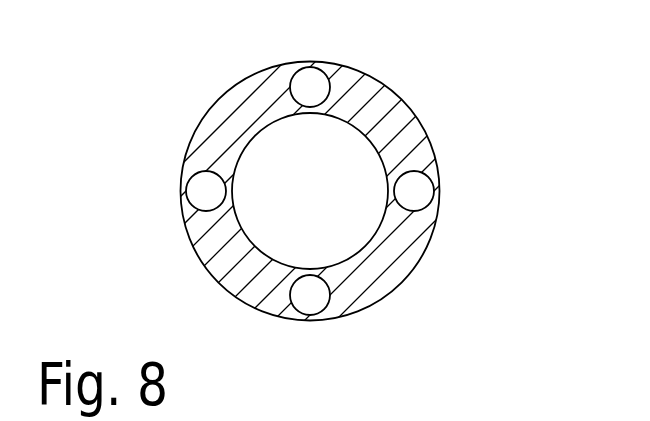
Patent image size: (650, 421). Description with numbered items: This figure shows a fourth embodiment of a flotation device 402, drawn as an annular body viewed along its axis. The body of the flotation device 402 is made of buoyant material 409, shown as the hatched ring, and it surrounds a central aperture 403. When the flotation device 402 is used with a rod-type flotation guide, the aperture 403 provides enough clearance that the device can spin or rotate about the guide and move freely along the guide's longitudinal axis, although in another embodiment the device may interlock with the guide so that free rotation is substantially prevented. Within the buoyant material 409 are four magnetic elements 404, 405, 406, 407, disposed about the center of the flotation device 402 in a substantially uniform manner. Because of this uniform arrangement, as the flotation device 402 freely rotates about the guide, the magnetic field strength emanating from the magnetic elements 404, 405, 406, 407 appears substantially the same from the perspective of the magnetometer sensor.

The flotation device 402 is at (313, 193).
The aperture 403 is at (381, 201).
The magnetic element 404 is at (309, 66).
The magnetic element 405 is at (433, 184).
The magnetic element 406 is at (306, 314).
The magnetic element 407 is at (193, 208).
The buoyant material 409 is at (405, 106).